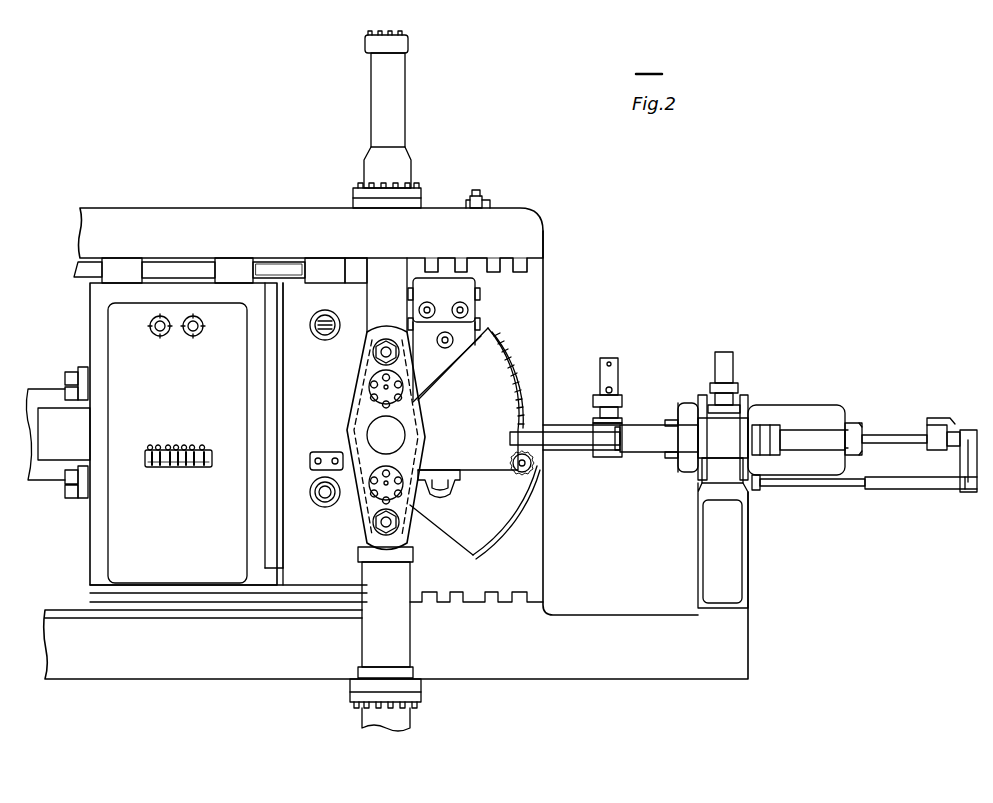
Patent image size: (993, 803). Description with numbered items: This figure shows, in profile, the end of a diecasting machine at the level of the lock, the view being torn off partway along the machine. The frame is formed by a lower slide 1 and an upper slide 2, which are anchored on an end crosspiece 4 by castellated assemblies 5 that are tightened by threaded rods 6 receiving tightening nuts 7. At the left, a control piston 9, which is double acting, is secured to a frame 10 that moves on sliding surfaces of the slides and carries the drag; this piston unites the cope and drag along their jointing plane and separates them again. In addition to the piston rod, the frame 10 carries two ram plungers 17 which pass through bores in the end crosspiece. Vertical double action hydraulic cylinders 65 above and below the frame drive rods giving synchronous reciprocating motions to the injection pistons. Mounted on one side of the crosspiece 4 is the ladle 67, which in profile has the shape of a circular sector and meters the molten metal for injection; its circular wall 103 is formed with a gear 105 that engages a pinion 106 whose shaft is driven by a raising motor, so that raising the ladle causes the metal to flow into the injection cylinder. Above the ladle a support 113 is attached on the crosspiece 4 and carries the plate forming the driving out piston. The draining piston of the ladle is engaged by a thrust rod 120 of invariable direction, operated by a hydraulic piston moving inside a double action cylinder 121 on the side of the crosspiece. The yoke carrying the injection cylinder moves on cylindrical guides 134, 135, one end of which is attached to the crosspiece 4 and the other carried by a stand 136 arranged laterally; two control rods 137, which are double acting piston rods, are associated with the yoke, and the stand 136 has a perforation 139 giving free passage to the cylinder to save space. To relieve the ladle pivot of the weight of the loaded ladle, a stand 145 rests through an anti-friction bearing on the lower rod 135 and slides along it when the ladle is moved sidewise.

The lower slide 1 is at (60, 650).
The upper slide 2 is at (201, 212).
The end crosspiece 4 is at (530, 284).
The castellated assemblies 5 is at (522, 268).
The threaded rods 6 is at (476, 192).
The tightening nuts 7 is at (488, 199).
The control piston 9 is at (43, 398).
The frame 10 is at (97, 538).
The ram plungers 17 is at (52, 441).
The double action hydraulic cylinders 65 is at (398, 174).
The ladle 67 is at (513, 360).
The circular wall 103 is at (528, 408).
The gear 105 is at (488, 386).
The pinion 106 is at (531, 466).
The support 113 is at (463, 329).
The thrust rod 120 is at (560, 434).
The double action cylinder 121 is at (641, 437).
The cylindrical guide 134 is at (373, 353).
The cylindrical guide 135 is at (378, 528).
The stand 136 is at (398, 653).
The control rods 137 is at (378, 388).
The perforation 139 is at (355, 434).
The stand 145 is at (452, 489).